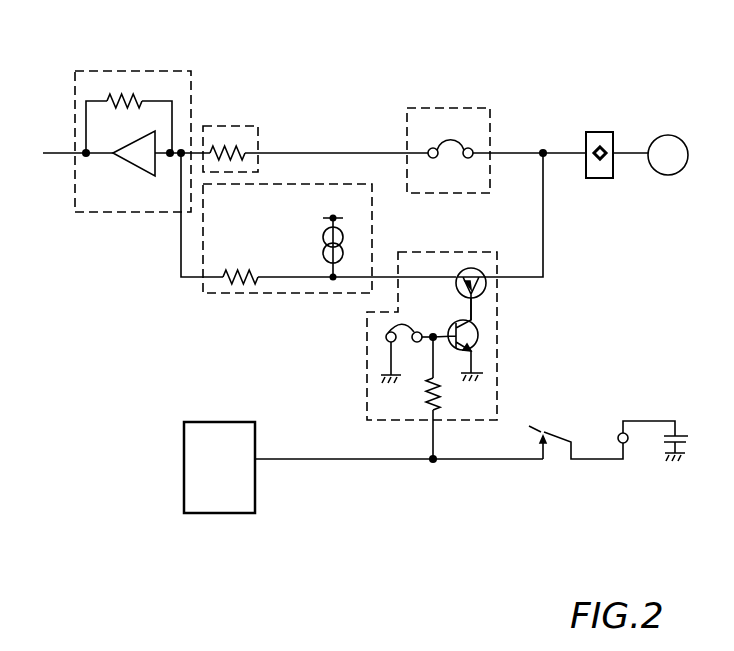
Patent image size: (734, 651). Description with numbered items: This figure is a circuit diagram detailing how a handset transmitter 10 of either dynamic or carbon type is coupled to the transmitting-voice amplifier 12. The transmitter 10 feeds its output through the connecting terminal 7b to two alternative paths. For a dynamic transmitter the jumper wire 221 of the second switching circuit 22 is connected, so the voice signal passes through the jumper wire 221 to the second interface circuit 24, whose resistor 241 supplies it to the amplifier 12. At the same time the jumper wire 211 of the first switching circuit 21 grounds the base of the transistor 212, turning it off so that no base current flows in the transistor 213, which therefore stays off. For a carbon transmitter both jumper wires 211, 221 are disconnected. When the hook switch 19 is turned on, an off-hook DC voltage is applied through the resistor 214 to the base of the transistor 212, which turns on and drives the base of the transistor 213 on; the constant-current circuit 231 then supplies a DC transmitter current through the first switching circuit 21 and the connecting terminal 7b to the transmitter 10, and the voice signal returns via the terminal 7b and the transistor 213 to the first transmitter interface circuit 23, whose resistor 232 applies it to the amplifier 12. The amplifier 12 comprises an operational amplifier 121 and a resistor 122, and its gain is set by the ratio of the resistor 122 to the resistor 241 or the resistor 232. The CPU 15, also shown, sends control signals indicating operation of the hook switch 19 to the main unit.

The transmitting-voice amplifier 12 is at (103, 71).
The resistor 122 is at (121, 97).
The operational amplifier 121 is at (130, 168).
The second interface circuit 24 is at (221, 126).
The resistor 241 is at (235, 148).
The second switching circuit 22 is at (430, 108).
The jumper wire 221 is at (462, 140).
The connecting terminal 7b is at (600, 146).
The transmitter 10 is at (668, 135).
The first transmitter interface circuit 23 is at (267, 293).
The constant-current circuit 231 is at (343, 238).
The resistor 232 is at (230, 280).
The first switching circuit 21 is at (437, 252).
The jumper wire 211 is at (388, 333).
The transistor 212 is at (479, 337).
The transistor 213 is at (487, 286).
The resistor 214 is at (440, 404).
The CPU 15 is at (215, 422).
The hook switch 19 is at (566, 430).